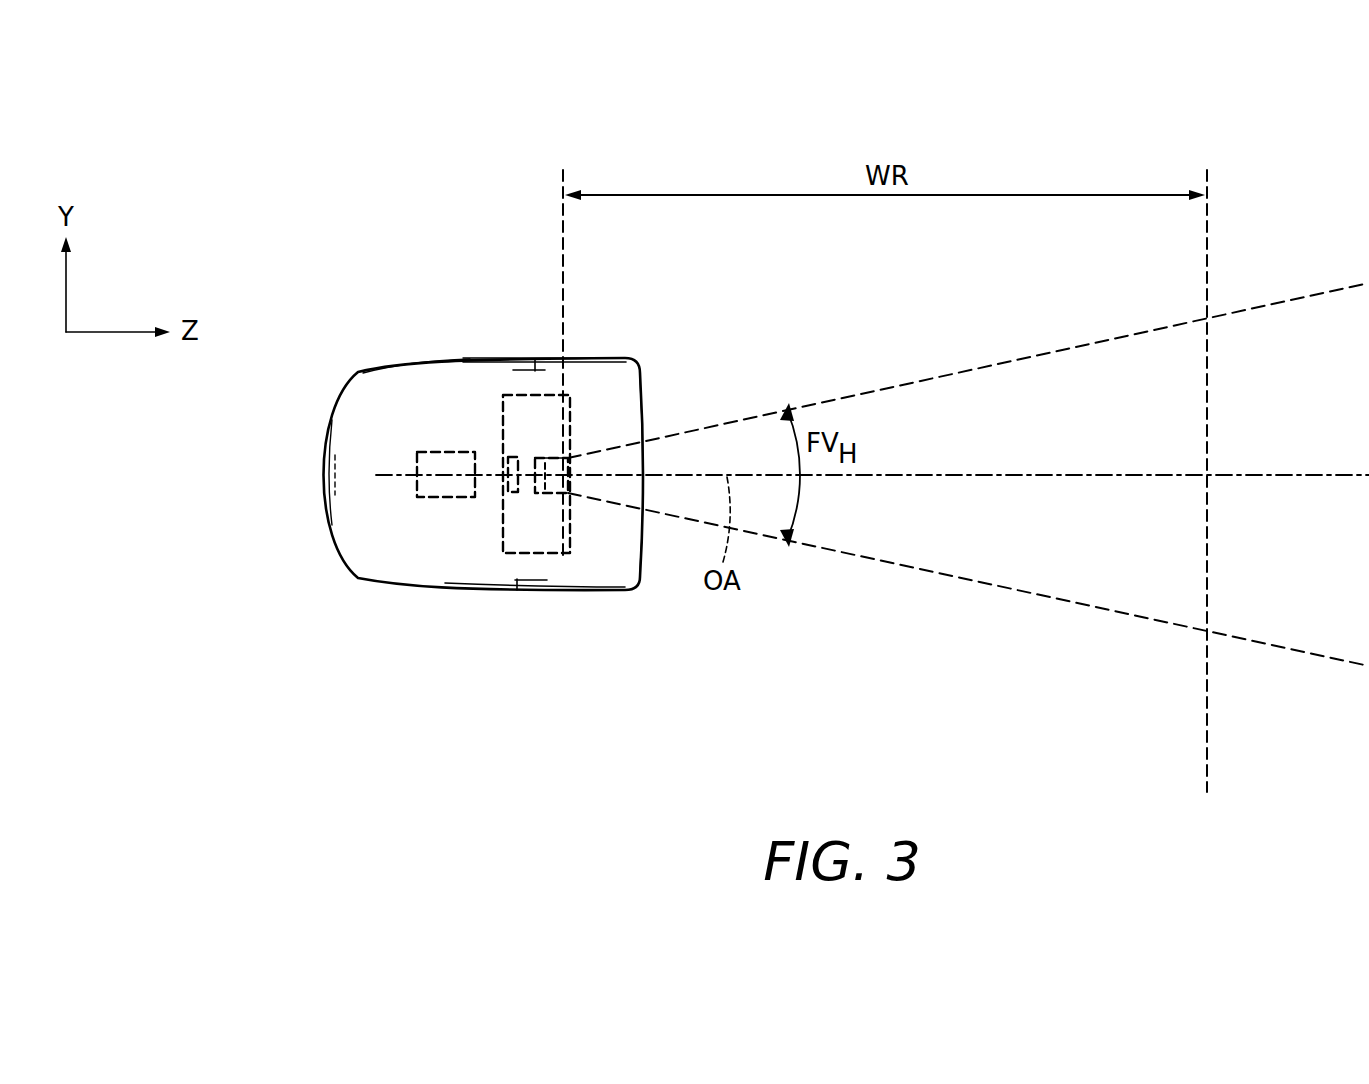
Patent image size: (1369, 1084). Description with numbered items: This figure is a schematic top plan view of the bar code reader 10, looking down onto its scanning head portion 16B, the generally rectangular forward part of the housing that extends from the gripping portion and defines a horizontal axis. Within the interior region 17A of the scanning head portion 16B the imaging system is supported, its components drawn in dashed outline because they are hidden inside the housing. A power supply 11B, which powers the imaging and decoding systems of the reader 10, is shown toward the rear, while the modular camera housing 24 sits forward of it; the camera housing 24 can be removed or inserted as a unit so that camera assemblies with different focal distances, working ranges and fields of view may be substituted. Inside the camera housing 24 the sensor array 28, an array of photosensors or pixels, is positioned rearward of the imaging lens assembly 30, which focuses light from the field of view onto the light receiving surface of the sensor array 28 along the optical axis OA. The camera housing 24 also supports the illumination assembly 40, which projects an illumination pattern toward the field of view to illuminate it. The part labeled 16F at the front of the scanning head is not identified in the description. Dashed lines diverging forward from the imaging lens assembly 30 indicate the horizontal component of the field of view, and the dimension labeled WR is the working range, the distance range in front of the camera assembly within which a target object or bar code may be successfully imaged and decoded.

The reader 10 is at (318, 394).
The interior region 17A is at (409, 385).
The scanning head portion 16B is at (463, 362).
The front housing portion 16F is at (644, 393).
The camera housing 24 is at (502, 428).
The power supply 11B is at (442, 498).
The sensor array 28 is at (513, 494).
The imaging lens assembly 30 is at (551, 493).
The illumination assembly 40 is at (550, 457).